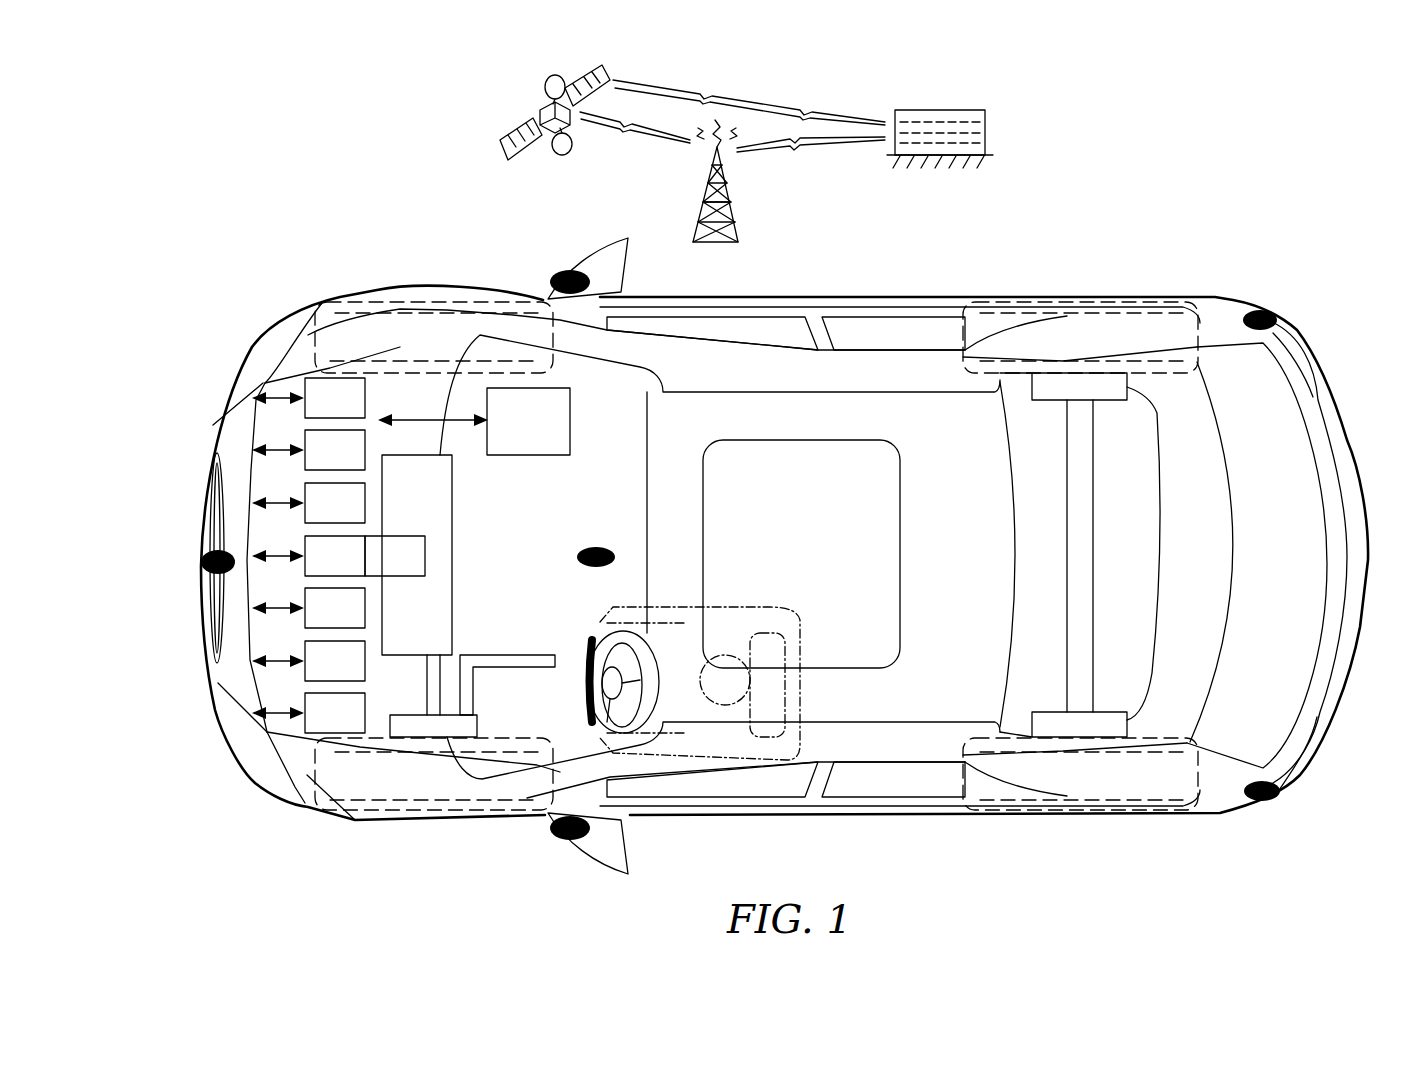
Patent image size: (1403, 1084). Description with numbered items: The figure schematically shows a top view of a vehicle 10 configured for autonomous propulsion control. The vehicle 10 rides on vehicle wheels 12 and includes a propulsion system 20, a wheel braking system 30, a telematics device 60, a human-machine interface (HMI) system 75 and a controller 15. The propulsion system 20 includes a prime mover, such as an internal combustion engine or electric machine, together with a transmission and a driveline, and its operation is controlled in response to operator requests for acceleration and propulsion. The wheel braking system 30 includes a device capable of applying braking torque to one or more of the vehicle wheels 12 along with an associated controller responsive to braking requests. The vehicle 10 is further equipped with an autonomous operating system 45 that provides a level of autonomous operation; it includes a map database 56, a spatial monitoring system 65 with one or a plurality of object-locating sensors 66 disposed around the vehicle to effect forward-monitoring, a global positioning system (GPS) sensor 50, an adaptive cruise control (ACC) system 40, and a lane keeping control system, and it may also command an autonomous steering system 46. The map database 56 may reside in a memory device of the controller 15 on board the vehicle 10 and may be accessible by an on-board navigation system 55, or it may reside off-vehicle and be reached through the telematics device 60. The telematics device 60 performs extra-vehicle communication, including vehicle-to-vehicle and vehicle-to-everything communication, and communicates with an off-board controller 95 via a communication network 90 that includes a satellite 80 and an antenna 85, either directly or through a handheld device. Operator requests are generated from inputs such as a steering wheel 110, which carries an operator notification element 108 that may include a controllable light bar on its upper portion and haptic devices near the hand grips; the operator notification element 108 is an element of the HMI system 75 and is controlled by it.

The vehicle 10 is at (240, 303).
The vehicle wheels 12 is at (405, 335).
The controller 15 is at (513, 436).
The propulsion system 20 is at (430, 500).
The wheel braking system 30 is at (408, 727).
The adaptive cruise control (ACC) system 40 is at (320, 412).
The autonomous operating system 45 is at (320, 464).
The autonomous steering system 46 is at (473, 687).
The global positioning system (GPS) sensor 50 is at (320, 517).
The on-board navigation system 55 is at (320, 570).
The map database 56 is at (380, 570).
The telematics device 60 is at (320, 622).
The spatial monitoring system 65 is at (320, 675).
The object-locating sensors 66 is at (205, 555).
The human-machine interface (HMI) system 75 is at (320, 727).
The satellite 80 is at (572, 122).
The antenna 85 is at (730, 187).
The communication network 90 is at (736, 124).
The off-board controller 95 is at (986, 124).
The operator notification element 108 is at (588, 657).
The steering wheel 110 is at (717, 610).